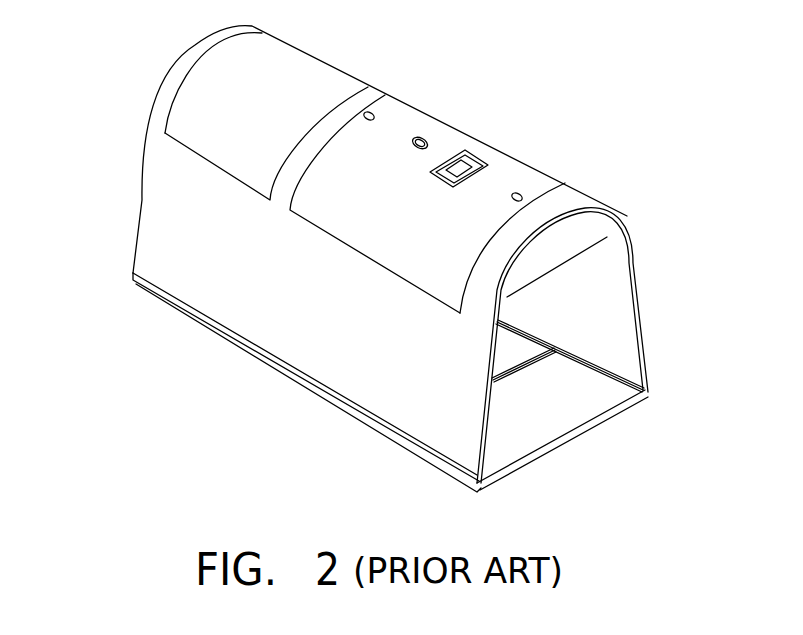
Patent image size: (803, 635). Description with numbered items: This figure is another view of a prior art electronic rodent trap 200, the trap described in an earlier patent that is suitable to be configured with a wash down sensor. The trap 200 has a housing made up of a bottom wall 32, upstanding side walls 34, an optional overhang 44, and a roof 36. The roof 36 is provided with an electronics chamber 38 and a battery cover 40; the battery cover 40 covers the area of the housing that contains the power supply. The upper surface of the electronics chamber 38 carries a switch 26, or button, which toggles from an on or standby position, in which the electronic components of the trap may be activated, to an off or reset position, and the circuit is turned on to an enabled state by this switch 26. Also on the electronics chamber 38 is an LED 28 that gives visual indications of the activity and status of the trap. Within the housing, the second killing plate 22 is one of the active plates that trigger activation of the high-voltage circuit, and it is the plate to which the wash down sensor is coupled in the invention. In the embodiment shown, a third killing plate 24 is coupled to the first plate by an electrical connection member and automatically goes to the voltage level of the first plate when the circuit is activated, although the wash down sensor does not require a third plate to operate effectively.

The electronic rodent trap 200 is at (178, 42).
The second killing plate 22 is at (513, 345).
The third killing plate 24 is at (558, 412).
The switch 26 is at (472, 150).
The LED 28 is at (428, 134).
The bottom wall 32 is at (372, 427).
The side walls 34 is at (158, 222).
The roof 36 is at (368, 92).
The electronics chamber 38 is at (523, 181).
The battery cover 40 is at (297, 43).
The overhang 44 is at (585, 233).